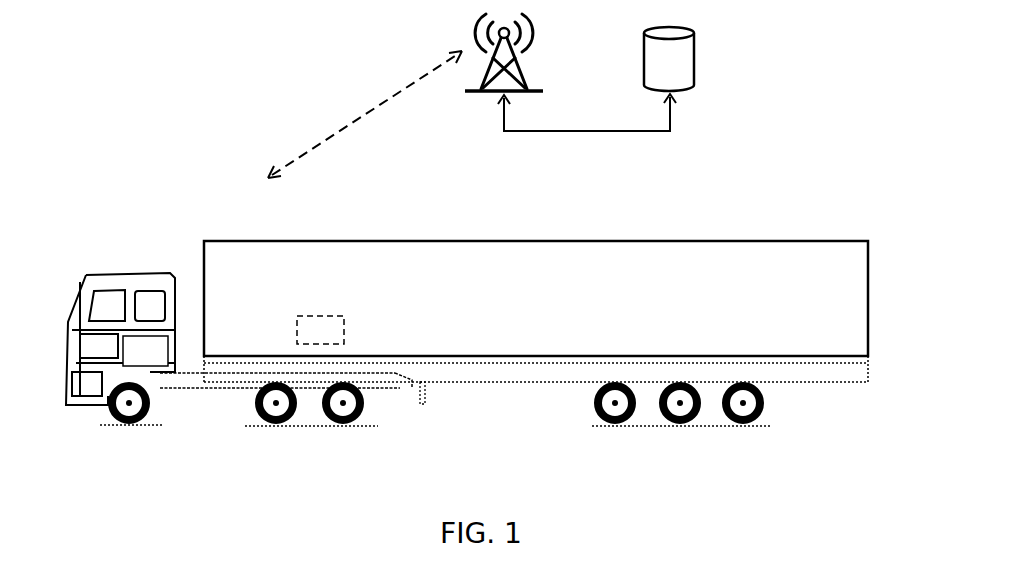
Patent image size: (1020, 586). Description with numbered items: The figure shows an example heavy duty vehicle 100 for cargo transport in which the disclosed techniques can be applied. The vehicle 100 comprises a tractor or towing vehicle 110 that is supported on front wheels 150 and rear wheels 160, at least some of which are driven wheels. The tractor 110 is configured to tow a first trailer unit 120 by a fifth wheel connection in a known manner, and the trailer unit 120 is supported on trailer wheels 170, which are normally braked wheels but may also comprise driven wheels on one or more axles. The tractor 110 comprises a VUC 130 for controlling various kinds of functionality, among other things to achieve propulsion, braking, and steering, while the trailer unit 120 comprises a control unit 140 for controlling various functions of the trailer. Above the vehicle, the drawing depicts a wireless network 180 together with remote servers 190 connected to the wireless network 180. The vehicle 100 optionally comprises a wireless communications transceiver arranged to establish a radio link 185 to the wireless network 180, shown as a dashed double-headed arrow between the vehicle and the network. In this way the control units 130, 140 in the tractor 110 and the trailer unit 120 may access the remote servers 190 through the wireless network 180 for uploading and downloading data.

The vehicle 100 is at (118, 190).
The tractor 110 is at (104, 277).
The first trailer unit 120 is at (384, 241).
The VUC 130 is at (145, 351).
The control unit 140 is at (320, 330).
The front wheels 150 is at (99, 447).
The rear wheels 160 is at (270, 448).
The trailer wheels 170 is at (750, 459).
The wireless network 180 is at (543, 80).
The radio link 185 is at (365, 114).
The remote servers 190 is at (696, 69).